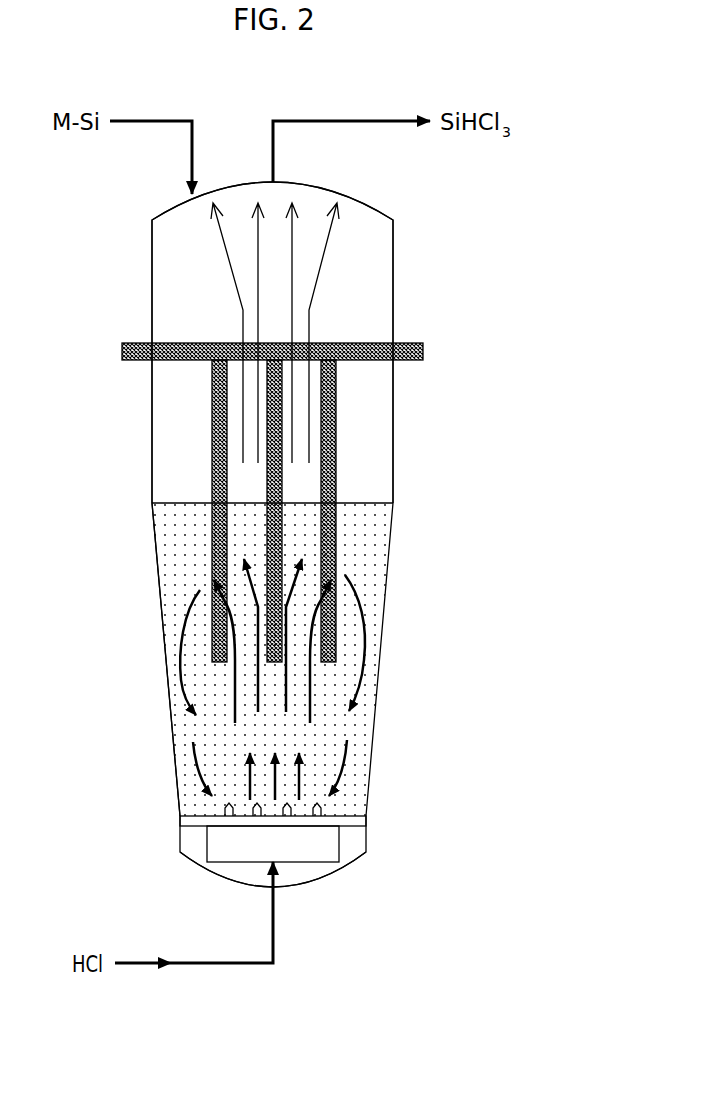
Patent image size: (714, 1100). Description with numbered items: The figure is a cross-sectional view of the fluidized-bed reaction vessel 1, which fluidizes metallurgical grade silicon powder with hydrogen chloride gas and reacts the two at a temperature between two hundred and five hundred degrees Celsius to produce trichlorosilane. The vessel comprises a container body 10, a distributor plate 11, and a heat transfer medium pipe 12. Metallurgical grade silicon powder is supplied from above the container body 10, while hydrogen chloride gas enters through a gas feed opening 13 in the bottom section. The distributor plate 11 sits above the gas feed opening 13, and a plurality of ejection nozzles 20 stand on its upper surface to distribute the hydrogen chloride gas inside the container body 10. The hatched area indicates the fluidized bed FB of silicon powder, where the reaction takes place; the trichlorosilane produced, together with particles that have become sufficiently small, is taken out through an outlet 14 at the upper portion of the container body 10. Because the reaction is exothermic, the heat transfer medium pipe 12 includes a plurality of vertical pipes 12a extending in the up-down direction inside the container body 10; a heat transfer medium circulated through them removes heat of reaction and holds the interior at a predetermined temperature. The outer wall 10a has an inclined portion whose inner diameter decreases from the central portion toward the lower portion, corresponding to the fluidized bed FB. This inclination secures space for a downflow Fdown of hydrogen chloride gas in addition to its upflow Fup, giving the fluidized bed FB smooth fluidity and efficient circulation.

The fluidized-bed reaction vessel 1 is at (476, 206).
The container body 10 is at (395, 272).
The outer wall 10a is at (164, 657).
The distributor plate 11 is at (340, 815).
The heat transfer medium pipe 12 is at (425, 352).
The vertical pipes 12a is at (337, 558).
The gas feed opening 13 is at (275, 890).
The outlet 14 is at (274, 180).
The ejection nozzles 20 is at (317, 818).
The fluidized bed FB is at (365, 524).
The downflow Fdown is at (365, 657).
The upflow Fup is at (310, 715).